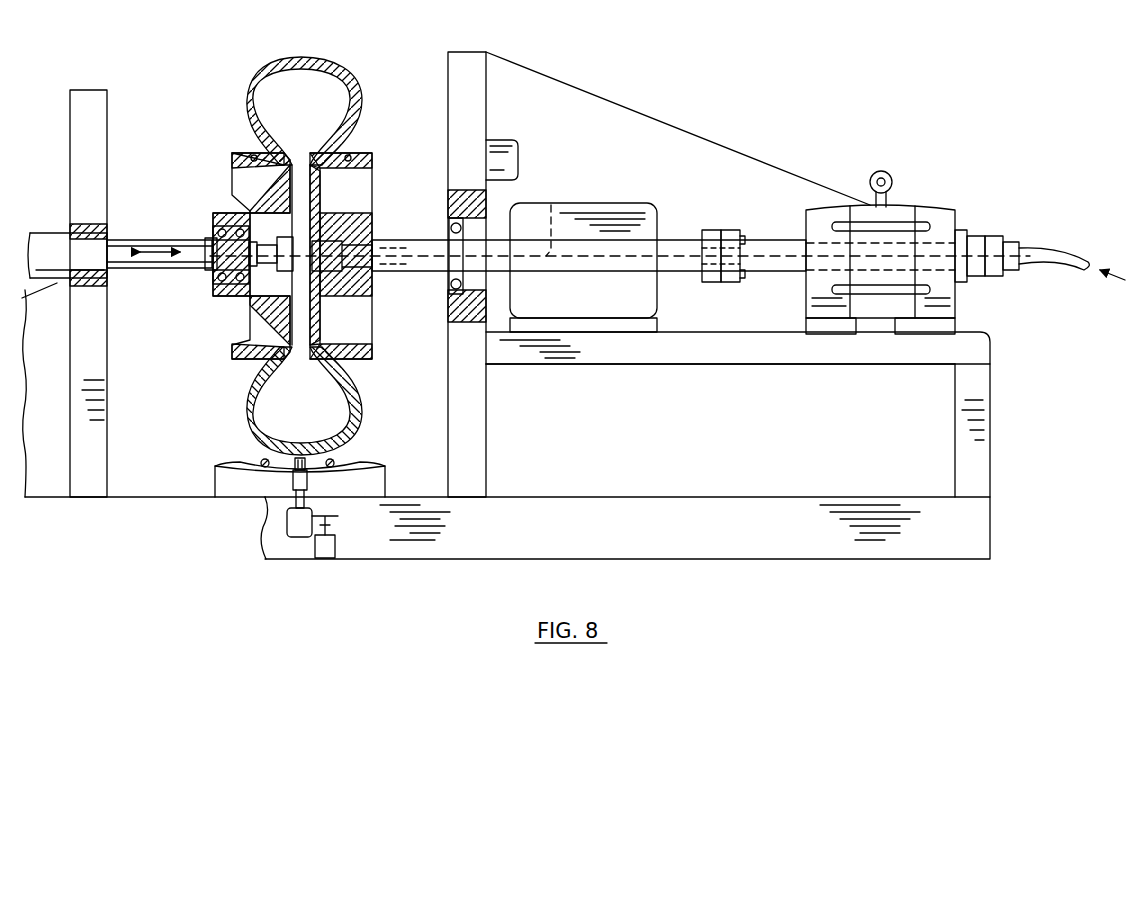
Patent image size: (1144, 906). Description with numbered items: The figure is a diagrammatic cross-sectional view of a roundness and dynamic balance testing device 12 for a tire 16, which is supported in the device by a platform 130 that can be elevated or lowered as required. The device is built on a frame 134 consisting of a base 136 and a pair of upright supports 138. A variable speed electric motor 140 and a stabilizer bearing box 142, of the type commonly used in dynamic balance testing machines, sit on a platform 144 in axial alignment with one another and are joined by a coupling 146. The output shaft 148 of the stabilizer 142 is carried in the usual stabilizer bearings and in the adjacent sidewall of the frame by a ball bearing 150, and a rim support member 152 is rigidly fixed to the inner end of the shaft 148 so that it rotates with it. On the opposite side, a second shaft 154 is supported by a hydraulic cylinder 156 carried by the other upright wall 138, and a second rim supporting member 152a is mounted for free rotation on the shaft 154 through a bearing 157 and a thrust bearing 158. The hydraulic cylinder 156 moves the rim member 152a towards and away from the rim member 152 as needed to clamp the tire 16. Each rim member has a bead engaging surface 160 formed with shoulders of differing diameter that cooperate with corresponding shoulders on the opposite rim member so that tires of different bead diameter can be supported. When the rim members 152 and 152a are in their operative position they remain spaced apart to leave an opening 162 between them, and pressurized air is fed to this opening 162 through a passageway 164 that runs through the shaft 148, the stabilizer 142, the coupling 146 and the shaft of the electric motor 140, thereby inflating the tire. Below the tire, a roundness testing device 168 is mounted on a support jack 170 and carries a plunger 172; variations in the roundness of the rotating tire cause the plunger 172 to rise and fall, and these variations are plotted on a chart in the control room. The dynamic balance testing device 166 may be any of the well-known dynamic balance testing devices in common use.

The roundness and dynamic testing device 12 is at (668, 108).
The tire 16 is at (310, 68).
The platform 130 is at (338, 460).
The frame 134 is at (1002, 457).
The base 136 is at (673, 548).
The upright supports 138 is at (70, 112).
The variable speed electric motor 140 is at (920, 210).
The stabilizer bearing box 142 is at (599, 211).
The platform 144 is at (733, 352).
The coupling 146 is at (726, 233).
The output shaft 148 is at (412, 266).
The ball bearing 150 is at (455, 226).
The rim support member 152 is at (362, 185).
The second rim supporting member 152a is at (240, 185).
The second shaft 154 is at (165, 266).
The hydraulic cylinder 156 is at (55, 244).
The bearing 157 is at (225, 232).
The thrust bearing 158 is at (218, 285).
The bead engaging surface 160 is at (250, 152).
The opening 162 is at (305, 310).
The passageway 164 is at (558, 217).
The dynamic balance testing device 166 is at (515, 160).
The roundness testing device 168 is at (290, 524).
The support jack 170 is at (325, 550).
The plunger 172 is at (295, 478).